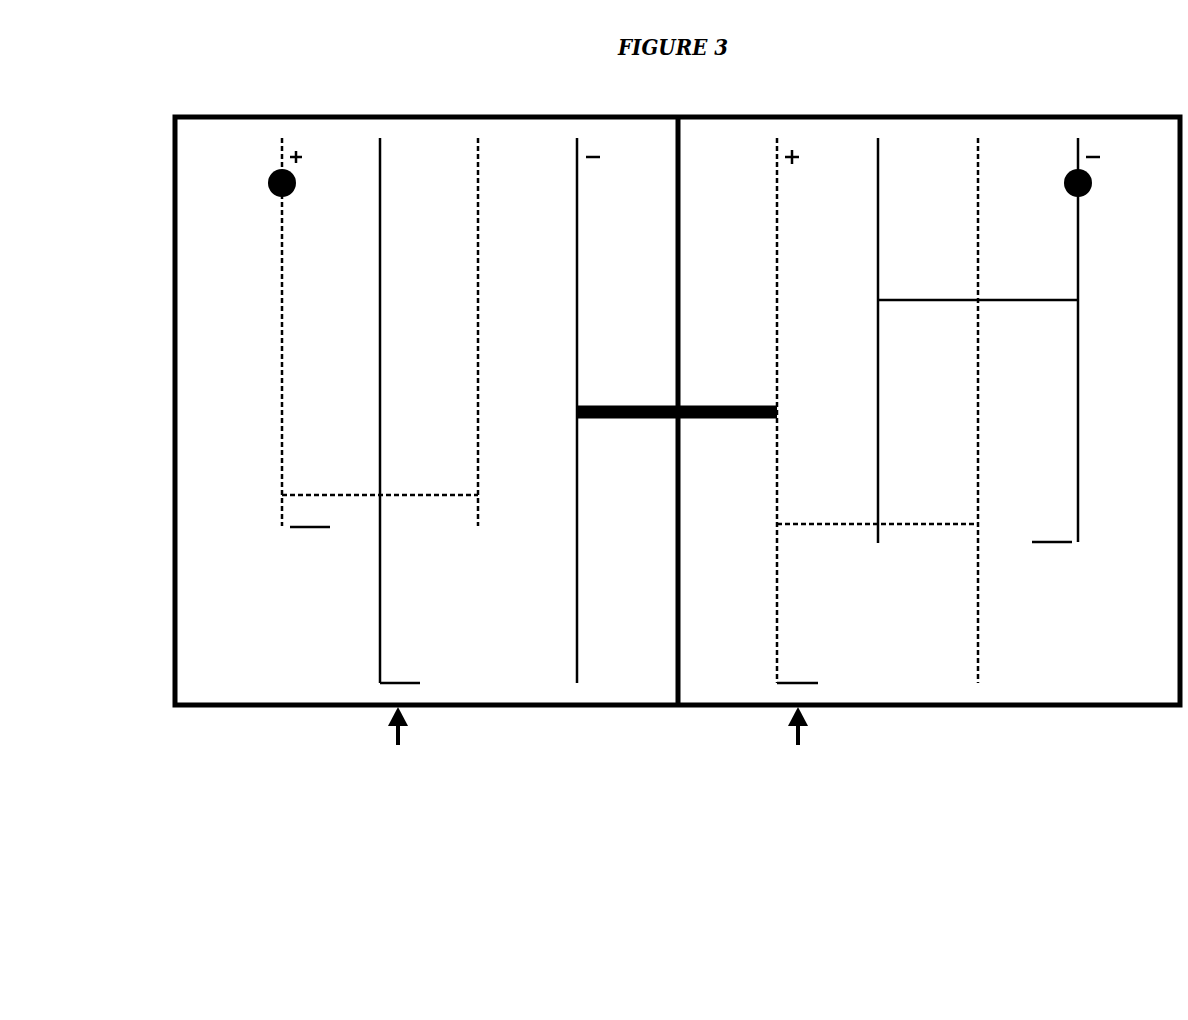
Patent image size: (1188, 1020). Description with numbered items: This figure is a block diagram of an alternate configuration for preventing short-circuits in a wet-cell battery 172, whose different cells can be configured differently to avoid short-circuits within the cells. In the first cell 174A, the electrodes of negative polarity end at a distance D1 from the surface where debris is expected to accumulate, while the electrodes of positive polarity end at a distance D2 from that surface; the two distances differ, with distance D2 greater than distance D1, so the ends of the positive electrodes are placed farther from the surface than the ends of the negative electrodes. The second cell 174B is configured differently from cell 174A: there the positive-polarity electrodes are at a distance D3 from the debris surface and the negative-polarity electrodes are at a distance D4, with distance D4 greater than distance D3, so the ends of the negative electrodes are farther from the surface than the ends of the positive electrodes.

The battery 172 is at (177, 116).
The cell 174A is at (178, 107).
The cell 174B is at (686, 107).
The distance D1 is at (398, 645).
The distance D2 is at (311, 545).
The distance D3 is at (798, 645).
The distance D4 is at (1053, 560).